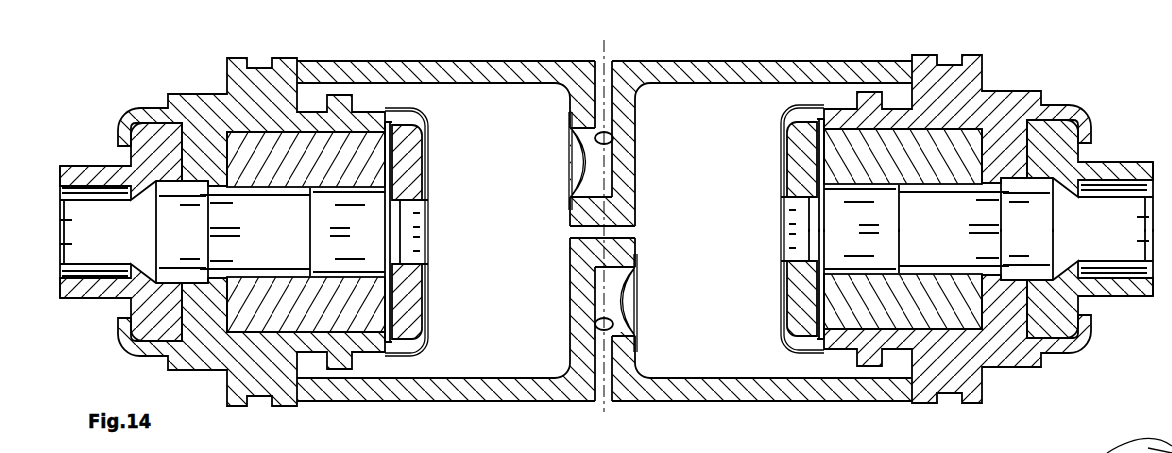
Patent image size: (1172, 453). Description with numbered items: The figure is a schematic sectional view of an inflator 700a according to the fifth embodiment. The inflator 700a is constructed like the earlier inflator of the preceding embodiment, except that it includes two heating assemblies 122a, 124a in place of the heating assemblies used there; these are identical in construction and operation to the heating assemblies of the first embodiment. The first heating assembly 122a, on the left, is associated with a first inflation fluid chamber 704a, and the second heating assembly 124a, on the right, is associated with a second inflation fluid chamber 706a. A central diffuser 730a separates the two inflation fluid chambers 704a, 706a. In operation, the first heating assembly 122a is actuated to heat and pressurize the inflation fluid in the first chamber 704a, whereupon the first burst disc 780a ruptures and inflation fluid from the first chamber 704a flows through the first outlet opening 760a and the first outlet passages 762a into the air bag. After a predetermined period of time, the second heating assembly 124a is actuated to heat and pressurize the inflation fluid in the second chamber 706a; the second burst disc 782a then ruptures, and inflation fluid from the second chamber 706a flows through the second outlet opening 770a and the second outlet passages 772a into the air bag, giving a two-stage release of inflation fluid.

The inflator 700a is at (707, 60).
The first outlet passages 762a is at (607, 61).
The first outlet opening 760a is at (573, 148).
The diffuser 730a is at (629, 136).
The first heating assembly 122a is at (446, 194).
The second heating assembly 124a is at (762, 190).
The first burst disc 780a is at (570, 176).
The first inflation fluid chamber 704a is at (518, 291).
The second inflation fluid chamber 706a is at (744, 234).
The second outlet opening 770a is at (635, 299).
The second burst disc 782a is at (633, 323).
The second outlet passages 772a is at (597, 366).